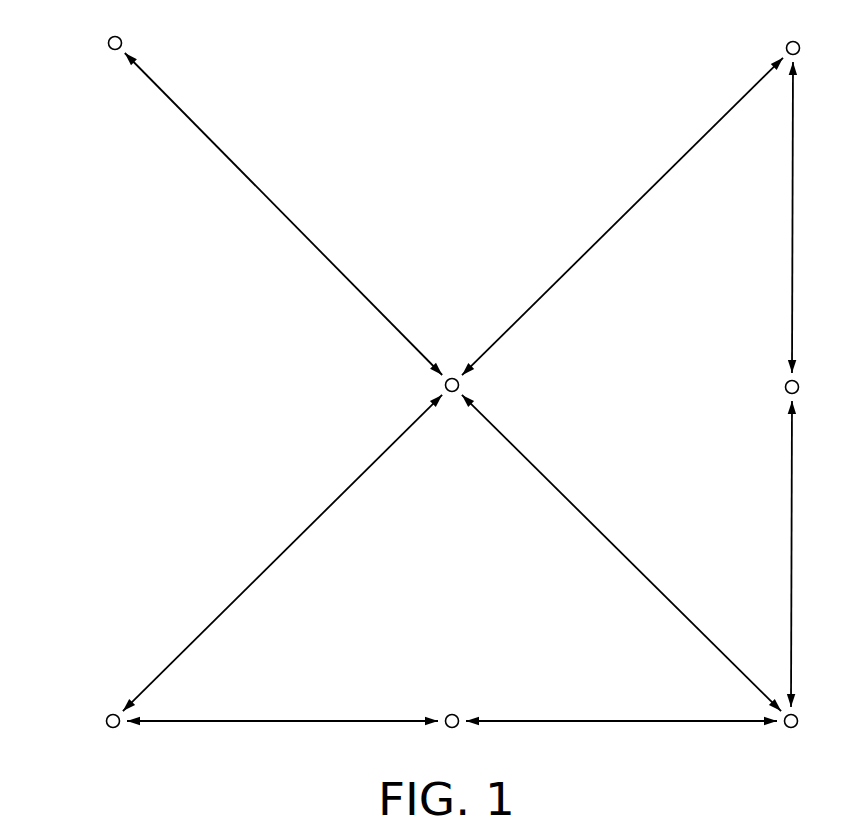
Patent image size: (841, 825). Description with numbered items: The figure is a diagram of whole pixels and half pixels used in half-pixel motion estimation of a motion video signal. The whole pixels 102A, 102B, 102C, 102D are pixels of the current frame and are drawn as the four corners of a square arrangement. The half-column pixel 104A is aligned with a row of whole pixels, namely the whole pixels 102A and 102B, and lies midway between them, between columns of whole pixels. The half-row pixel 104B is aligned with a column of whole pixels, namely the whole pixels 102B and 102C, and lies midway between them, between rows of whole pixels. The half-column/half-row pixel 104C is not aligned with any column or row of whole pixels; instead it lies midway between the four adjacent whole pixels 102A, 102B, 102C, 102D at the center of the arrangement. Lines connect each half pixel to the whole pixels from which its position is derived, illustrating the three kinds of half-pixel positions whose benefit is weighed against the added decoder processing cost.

The whole pixel 102A is at (109, 728).
The whole pixel 102B is at (796, 728).
The whole pixel 102C is at (788, 41).
The whole pixel 102D is at (109, 38).
The half-column pixel 104A is at (451, 714).
The half-row pixel 104B is at (786, 387).
The half-column/half-row pixel 104C is at (460, 383).